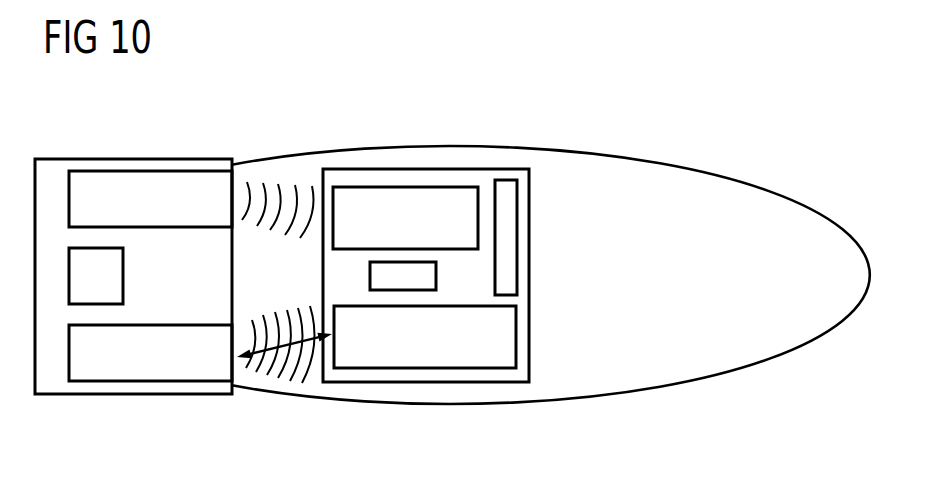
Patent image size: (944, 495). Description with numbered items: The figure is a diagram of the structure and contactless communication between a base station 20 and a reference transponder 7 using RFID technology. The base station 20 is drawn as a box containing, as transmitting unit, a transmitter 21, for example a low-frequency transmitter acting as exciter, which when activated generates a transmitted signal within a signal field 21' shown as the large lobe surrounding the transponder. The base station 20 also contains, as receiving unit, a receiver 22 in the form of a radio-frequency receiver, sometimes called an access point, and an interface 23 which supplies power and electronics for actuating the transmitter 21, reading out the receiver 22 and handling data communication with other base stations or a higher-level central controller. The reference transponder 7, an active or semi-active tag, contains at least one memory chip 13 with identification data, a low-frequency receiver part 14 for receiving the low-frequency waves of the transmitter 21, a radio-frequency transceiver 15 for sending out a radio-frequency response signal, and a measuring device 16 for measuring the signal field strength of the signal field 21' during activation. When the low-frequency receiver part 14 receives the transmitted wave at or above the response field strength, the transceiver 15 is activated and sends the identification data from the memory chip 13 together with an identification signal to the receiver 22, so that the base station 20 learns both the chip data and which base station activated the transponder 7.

The reference transponder 7 is at (567, 290).
The memory chip 13 is at (370, 272).
The low-frequency receiver part 14 is at (404, 187).
The radio-frequency transceiver 15 is at (398, 369).
The measuring device 16 is at (517, 237).
The base station 20 is at (50, 171).
The transmitter 21 is at (150, 164).
The signal field 21' is at (551, 259).
The receiver 22 is at (141, 382).
The interface 23 is at (123, 275).